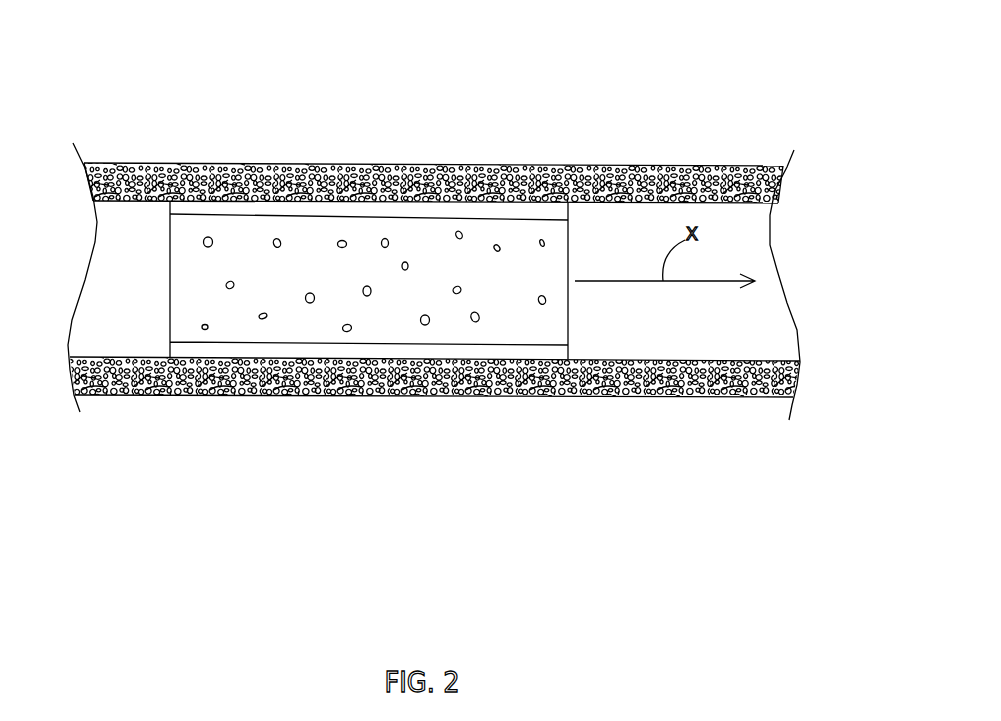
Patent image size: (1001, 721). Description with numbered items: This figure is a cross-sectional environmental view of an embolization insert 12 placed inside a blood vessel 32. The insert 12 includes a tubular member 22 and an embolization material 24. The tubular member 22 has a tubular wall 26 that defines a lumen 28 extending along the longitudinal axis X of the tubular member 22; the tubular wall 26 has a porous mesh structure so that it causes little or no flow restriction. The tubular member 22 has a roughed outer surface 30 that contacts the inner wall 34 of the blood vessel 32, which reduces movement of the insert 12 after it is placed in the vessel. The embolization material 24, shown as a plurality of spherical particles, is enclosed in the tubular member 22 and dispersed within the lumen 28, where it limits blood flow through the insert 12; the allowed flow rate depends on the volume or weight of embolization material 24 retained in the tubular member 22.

The embolization insert 12 is at (405, 194).
The tubular member 22 is at (550, 187).
The embolization material 24 is at (343, 239).
The tubular wall 26 is at (468, 212).
The lumen 28 is at (195, 308).
The roughed outer surface 30 is at (227, 165).
The blood vessel 32 is at (118, 165).
The inner wall 34 is at (130, 200).